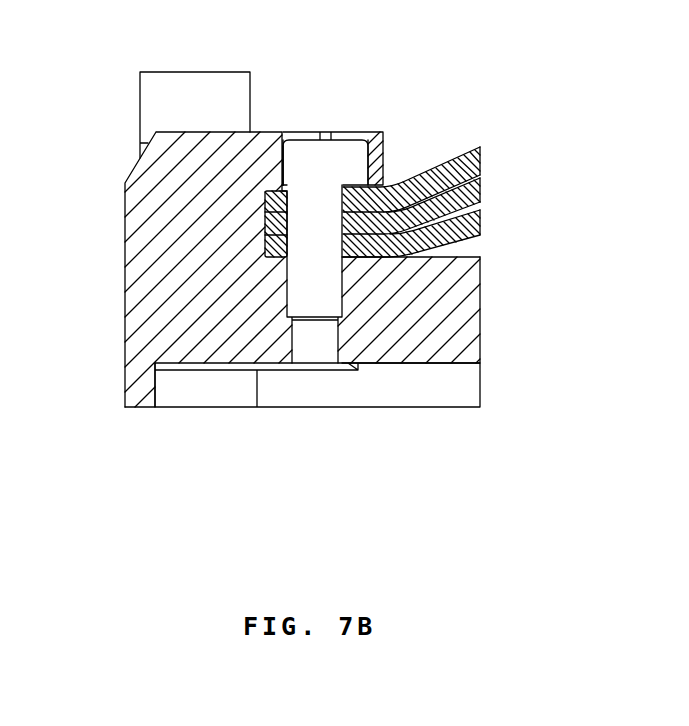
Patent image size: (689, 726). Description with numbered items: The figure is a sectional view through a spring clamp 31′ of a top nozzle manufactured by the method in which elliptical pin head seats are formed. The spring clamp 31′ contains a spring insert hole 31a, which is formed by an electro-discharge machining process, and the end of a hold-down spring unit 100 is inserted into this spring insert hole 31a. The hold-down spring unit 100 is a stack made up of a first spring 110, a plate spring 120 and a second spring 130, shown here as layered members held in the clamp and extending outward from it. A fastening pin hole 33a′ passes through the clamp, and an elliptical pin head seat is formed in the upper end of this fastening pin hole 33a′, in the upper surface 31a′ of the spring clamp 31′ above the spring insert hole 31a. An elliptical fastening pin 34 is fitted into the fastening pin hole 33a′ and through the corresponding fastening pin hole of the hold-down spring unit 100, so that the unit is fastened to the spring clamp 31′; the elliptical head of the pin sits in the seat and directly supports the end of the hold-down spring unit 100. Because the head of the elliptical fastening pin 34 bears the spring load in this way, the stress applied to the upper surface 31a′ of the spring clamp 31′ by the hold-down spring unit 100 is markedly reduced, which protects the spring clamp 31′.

The spring clamp 31′ is at (133, 297).
The spring insert hole 31a is at (412, 243).
The upper surface 31a′ is at (380, 152).
The fastening pin hole 33a′ is at (288, 256).
The elliptical fastening pin 34 is at (300, 286).
The hold-down spring unit 100 is at (482, 137).
The first spring 110 is at (481, 156).
The plate spring 120 is at (481, 188).
The second spring 130 is at (481, 220).